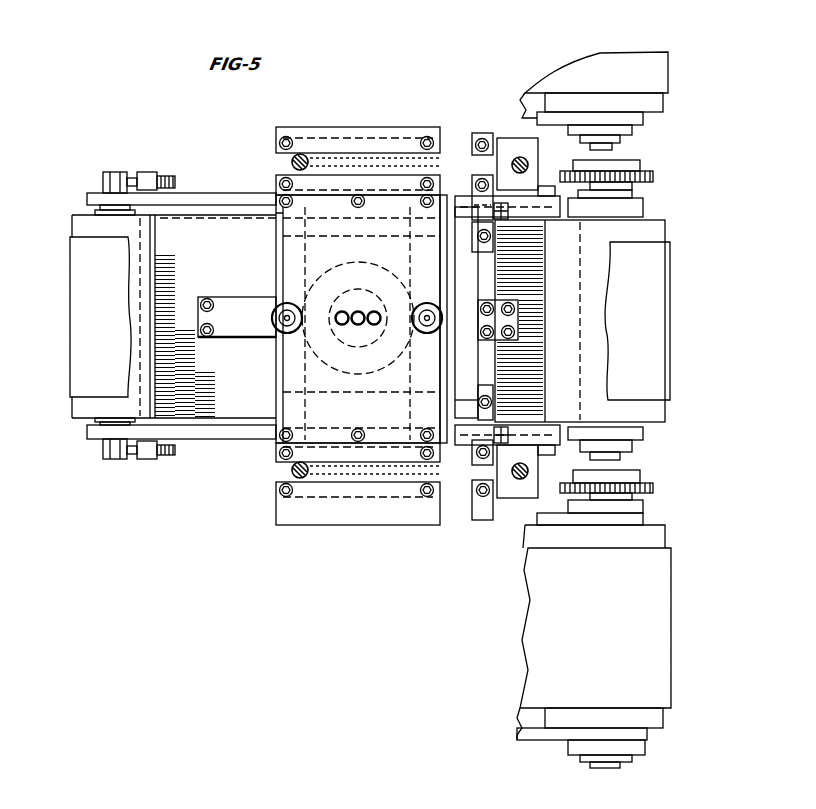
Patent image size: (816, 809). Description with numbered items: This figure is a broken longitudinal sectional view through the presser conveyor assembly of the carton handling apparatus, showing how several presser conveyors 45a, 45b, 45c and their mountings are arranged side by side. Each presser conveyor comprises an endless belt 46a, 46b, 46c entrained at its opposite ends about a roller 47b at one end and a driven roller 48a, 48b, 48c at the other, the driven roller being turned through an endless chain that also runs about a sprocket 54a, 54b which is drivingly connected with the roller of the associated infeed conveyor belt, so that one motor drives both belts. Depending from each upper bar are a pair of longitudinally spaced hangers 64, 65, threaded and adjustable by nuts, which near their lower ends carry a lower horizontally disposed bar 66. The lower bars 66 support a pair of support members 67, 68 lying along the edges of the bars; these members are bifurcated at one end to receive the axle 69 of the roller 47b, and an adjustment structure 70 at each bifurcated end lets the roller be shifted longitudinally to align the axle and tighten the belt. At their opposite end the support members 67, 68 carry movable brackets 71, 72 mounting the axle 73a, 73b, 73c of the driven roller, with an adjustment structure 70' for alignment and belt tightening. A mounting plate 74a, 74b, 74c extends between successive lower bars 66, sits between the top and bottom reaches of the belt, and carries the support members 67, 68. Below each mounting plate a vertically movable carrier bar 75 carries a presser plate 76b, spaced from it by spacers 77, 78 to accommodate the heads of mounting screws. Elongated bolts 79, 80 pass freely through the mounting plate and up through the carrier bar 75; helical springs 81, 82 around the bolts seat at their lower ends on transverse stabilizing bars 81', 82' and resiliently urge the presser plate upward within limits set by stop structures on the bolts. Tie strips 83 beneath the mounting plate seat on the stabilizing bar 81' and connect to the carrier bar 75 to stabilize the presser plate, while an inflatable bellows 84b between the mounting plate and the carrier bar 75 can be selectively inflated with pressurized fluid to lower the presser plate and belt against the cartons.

The presser conveyor 45a is at (676, 668).
The presser conveyor 45b is at (676, 370).
The presser conveyor 45c is at (676, 64).
The endless belt 46a is at (672, 605).
The endless belt 46b is at (664, 302).
The endless belt 46c is at (663, 55).
The roller 47b is at (72, 218).
The roller 48a is at (662, 718).
The roller 48b is at (662, 418).
The roller 48c is at (663, 107).
The sprocket 54a is at (655, 490).
The sprocket 54b is at (655, 177).
The hanger 64 is at (305, 158).
The hanger 65 is at (520, 157).
The lower bar 66 is at (473, 140).
The support member 67 is at (222, 176).
The support member 68 is at (232, 440).
The axle 69 is at (108, 460).
The adjustment structure 70 is at (139, 321).
The adjustment structure 70' is at (516, 323).
The movable bracket 71 is at (645, 207).
The movable bracket 72 is at (645, 440).
The axle 73a is at (620, 768).
The axle 73b is at (620, 460).
The axle 73c is at (612, 150).
The mounting plate 74a is at (385, 523).
The mounting plate 74b is at (303, 223).
The mounting plate 74c is at (378, 128).
The carrier bar 75 is at (237, 336).
The presser plate 76b is at (590, 284).
The spacer 77 is at (216, 308).
The spacer 78 is at (498, 308).
The elongated bolt 79 is at (292, 318).
The elongated bolt 80 is at (422, 315).
The helical spring 81 is at (358, 319).
The stabilizing bar 81' is at (293, 331).
The helical spring 82 is at (412, 319).
The stabilizing bar 82' is at (428, 313).
The tie strip 83 is at (470, 402).
The inflatable bellows 84b is at (365, 268).